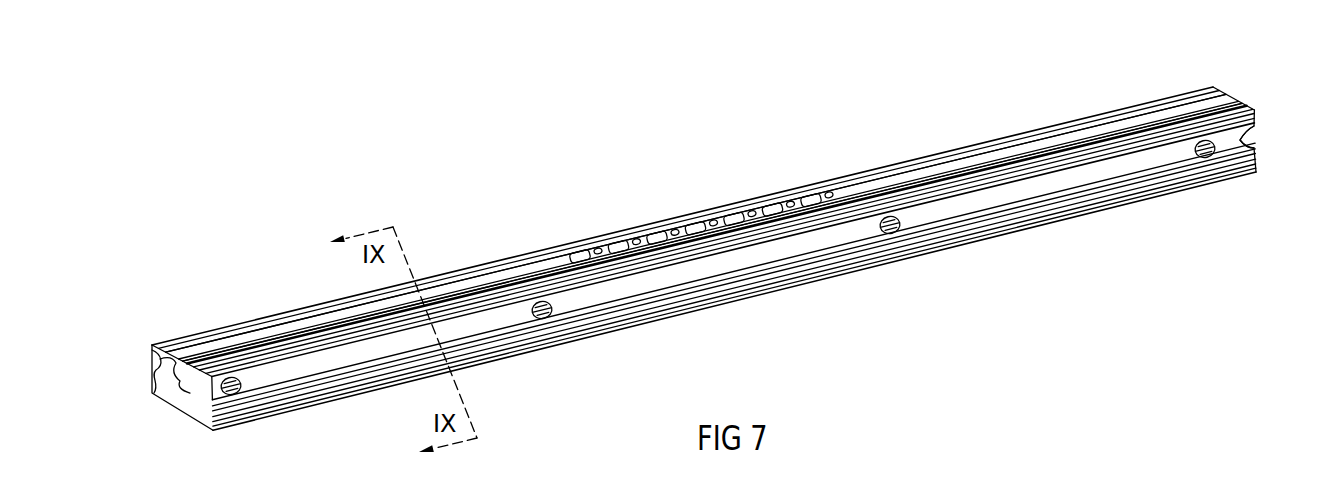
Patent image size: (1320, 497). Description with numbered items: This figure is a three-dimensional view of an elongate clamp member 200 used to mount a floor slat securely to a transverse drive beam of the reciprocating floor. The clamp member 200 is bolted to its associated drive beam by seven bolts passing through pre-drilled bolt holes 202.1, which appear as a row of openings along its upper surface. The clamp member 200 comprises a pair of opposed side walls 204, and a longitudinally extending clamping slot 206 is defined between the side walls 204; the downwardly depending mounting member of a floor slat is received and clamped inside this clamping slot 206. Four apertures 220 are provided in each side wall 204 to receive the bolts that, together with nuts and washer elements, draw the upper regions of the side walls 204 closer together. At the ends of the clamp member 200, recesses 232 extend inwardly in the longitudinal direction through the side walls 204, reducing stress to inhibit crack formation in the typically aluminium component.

The clamp member 200 is at (866, 156).
The bolt holes 202.1 is at (657, 243).
The side walls 204 is at (160, 396).
The clamping slot 206 is at (1037, 158).
The apertures 220 is at (547, 313).
The recesses 232 is at (1247, 138).